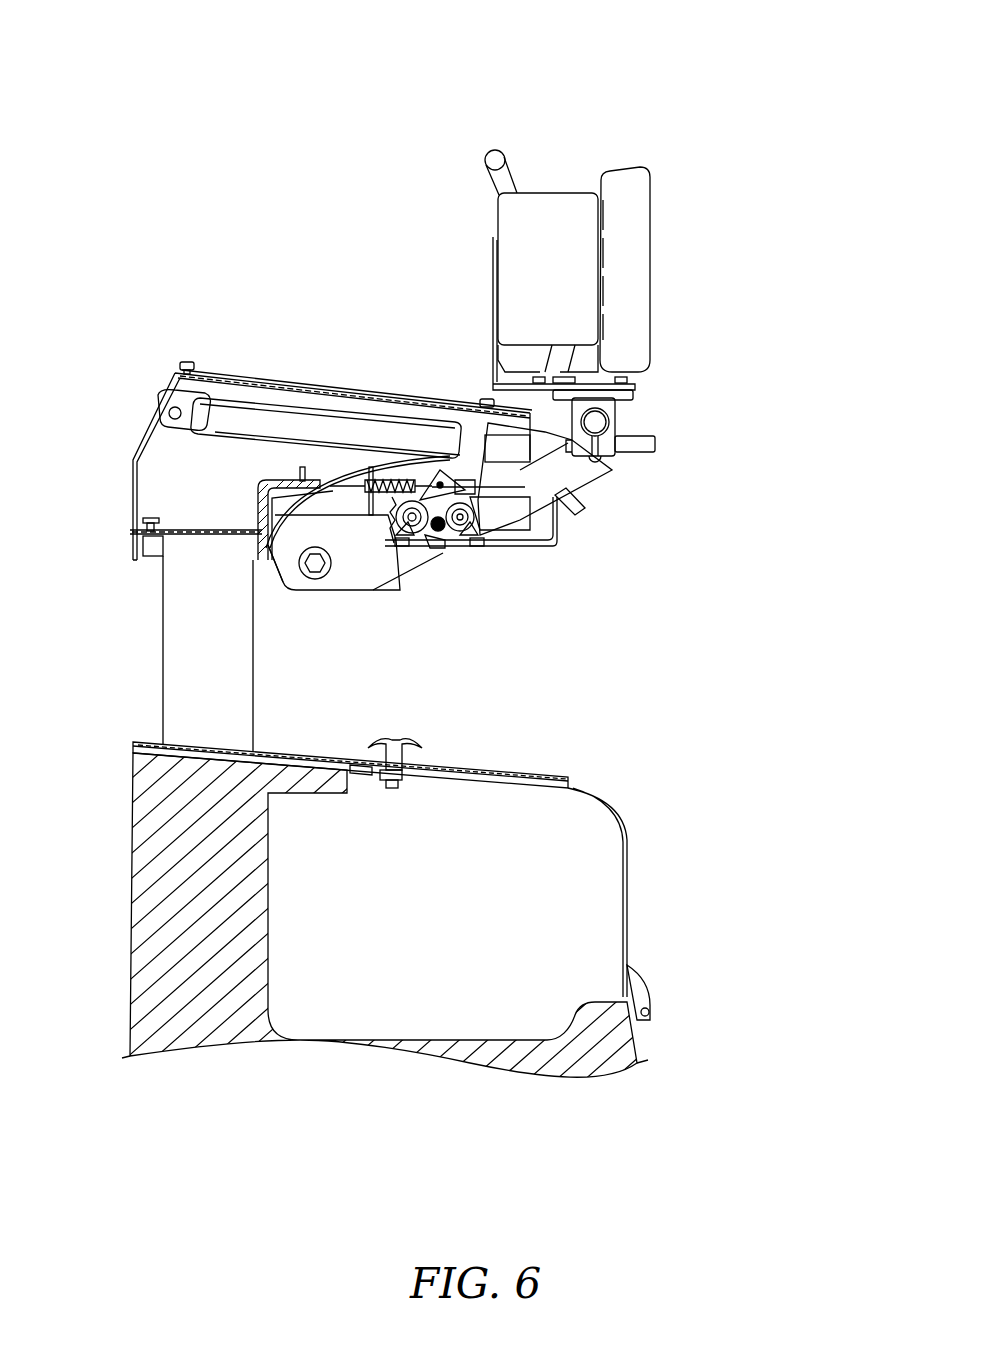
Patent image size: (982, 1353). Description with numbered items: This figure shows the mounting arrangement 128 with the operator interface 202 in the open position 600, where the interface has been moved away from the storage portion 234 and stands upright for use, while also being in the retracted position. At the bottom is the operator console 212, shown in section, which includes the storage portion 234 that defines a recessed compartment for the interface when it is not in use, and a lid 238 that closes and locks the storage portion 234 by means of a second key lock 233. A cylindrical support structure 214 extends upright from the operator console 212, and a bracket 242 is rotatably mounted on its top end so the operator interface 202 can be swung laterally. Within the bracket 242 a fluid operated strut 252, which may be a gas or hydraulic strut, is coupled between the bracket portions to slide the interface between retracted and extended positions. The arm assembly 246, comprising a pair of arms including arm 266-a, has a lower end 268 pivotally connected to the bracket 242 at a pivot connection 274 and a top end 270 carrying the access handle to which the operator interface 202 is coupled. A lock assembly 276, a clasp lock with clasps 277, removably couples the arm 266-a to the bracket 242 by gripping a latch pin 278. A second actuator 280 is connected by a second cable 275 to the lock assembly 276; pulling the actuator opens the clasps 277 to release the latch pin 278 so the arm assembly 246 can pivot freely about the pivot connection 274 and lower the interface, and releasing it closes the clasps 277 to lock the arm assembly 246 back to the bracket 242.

The imaging assembly 128 is at (808, 62).
The open position 600 is at (155, 129).
The operator interface 202 is at (556, 178).
The top end 270 is at (612, 470).
The second actuator 280 is at (584, 508).
The arm 266-a is at (565, 528).
The fluid operated strut 252 is at (297, 422).
The bracket 242 is at (265, 397).
The second cable 275 is at (337, 432).
The clasps 277 is at (440, 482).
The pivot connection 274 is at (270, 545).
The arm assembly 246 is at (350, 570).
The lower end 268 is at (277, 580).
The latch pin 278 is at (445, 545).
The lock assembly 276 is at (425, 548).
The support structure 214 is at (178, 666).
The operator console 212 is at (130, 800).
The second key lock 233 is at (392, 738).
The lid 238 is at (537, 770).
The storage portion 234 is at (602, 797).